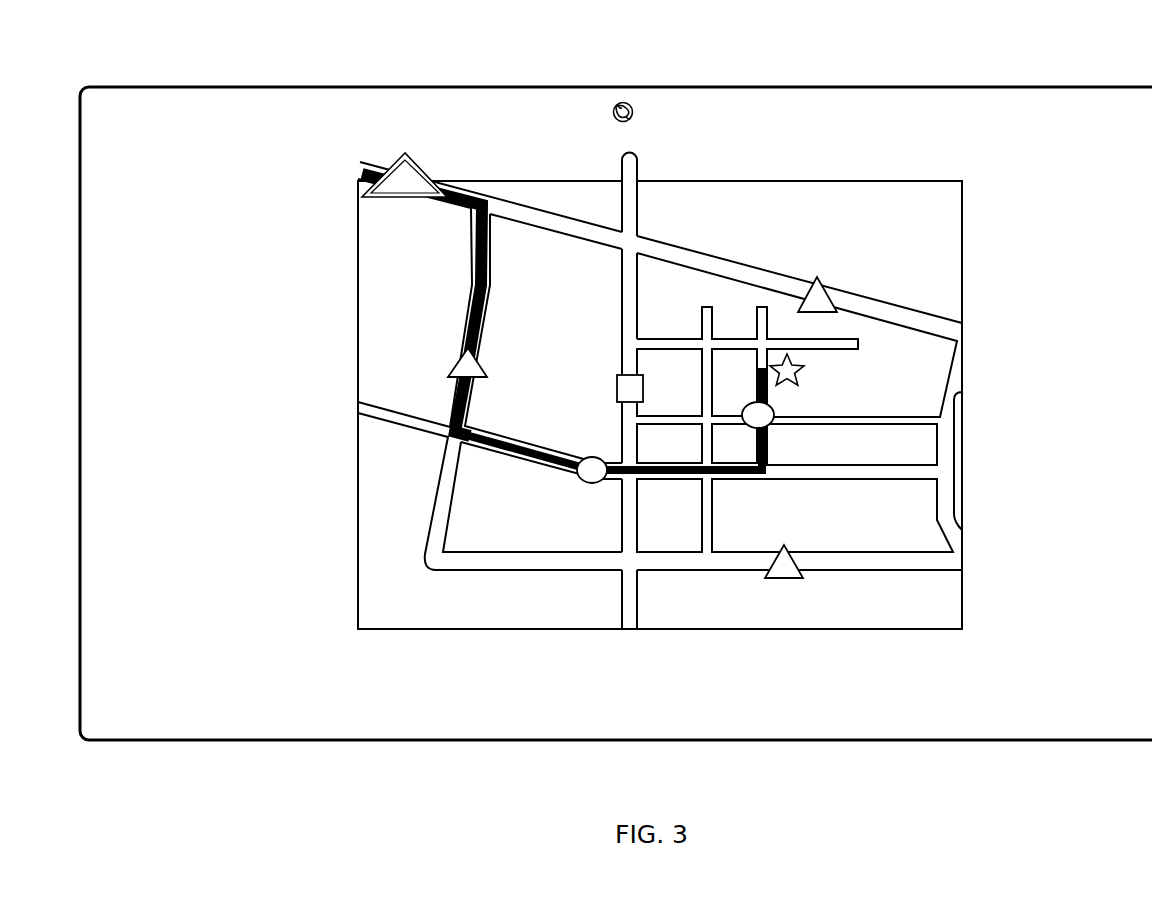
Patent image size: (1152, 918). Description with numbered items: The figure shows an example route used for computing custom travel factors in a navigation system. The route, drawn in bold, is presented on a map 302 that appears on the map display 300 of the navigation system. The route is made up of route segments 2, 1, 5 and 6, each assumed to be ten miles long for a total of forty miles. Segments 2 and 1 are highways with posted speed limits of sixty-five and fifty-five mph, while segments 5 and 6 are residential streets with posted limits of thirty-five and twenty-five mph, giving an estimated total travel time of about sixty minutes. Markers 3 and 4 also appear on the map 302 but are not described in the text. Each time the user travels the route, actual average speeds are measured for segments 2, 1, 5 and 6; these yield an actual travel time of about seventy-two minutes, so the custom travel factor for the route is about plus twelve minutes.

The map display 300 is at (229, 60).
The map 302 is at (918, 181).
The route segment 1 is at (467, 363).
The route segment 2 is at (817, 295).
The route marker 3 is at (784, 562).
The route marker 4 is at (630, 388).
The route segment 5 is at (592, 470).
The route segment 6 is at (758, 415).